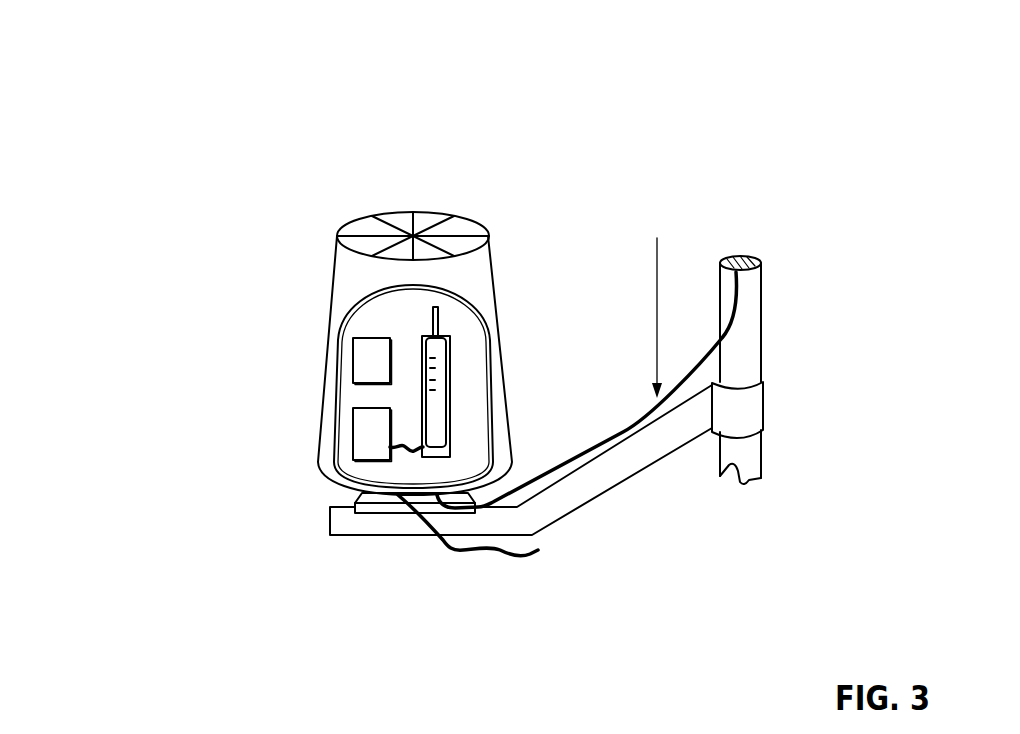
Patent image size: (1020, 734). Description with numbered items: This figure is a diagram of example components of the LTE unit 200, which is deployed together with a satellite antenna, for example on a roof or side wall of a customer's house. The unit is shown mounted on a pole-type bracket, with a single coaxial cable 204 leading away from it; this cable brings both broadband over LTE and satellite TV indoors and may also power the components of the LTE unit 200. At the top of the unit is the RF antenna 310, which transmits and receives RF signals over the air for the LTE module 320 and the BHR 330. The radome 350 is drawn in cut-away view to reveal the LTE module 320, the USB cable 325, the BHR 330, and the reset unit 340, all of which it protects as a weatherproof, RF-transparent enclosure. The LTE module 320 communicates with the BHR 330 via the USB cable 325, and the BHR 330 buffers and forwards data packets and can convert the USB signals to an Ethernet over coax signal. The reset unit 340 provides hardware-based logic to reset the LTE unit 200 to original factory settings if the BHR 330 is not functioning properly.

The LTE unit 200 is at (92, 42).
The coaxial cable 204 is at (441, 576).
The RF antenna 310 is at (413, 168).
The LTE module 320 is at (254, 435).
The USB cable 325 is at (502, 384).
The broadband home router 330 is at (496, 358).
The reset unit 340 is at (276, 361).
The radome 350 is at (357, 365).